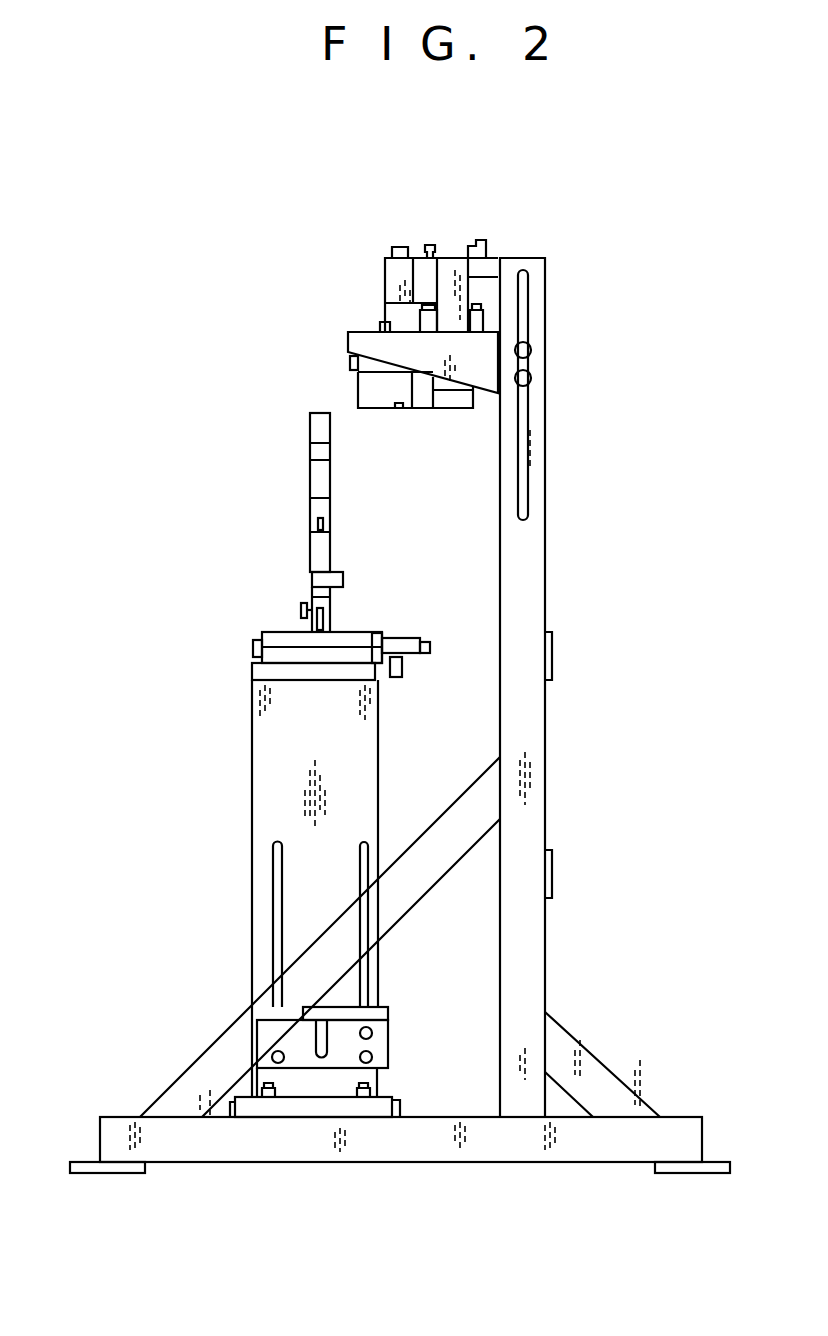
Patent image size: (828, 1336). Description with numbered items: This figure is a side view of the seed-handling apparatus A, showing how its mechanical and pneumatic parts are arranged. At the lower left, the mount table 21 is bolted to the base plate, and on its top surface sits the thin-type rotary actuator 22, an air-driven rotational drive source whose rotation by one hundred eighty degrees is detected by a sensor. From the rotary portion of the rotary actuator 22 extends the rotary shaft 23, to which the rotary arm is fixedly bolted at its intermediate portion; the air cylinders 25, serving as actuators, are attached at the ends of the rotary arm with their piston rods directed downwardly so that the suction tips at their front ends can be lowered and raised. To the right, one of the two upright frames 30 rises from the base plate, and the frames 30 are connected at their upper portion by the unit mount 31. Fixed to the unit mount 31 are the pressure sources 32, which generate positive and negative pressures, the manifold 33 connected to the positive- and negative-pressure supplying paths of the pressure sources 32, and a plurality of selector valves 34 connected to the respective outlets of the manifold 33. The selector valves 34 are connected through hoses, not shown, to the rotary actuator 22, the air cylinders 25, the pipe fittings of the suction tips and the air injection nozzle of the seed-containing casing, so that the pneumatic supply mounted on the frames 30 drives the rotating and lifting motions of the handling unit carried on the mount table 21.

The bonding apparatus A is at (597, 257).
The mount table 21 is at (265, 795).
The rotary actuator 22 is at (270, 652).
The rotary shaft 23 is at (302, 608).
The air cylinders 25 is at (316, 506).
The frames 30 is at (530, 796).
The unit mount 31 is at (372, 337).
The pressure sources 32 is at (390, 272).
The manifold 33 is at (356, 362).
The selector valves 34 is at (360, 386).